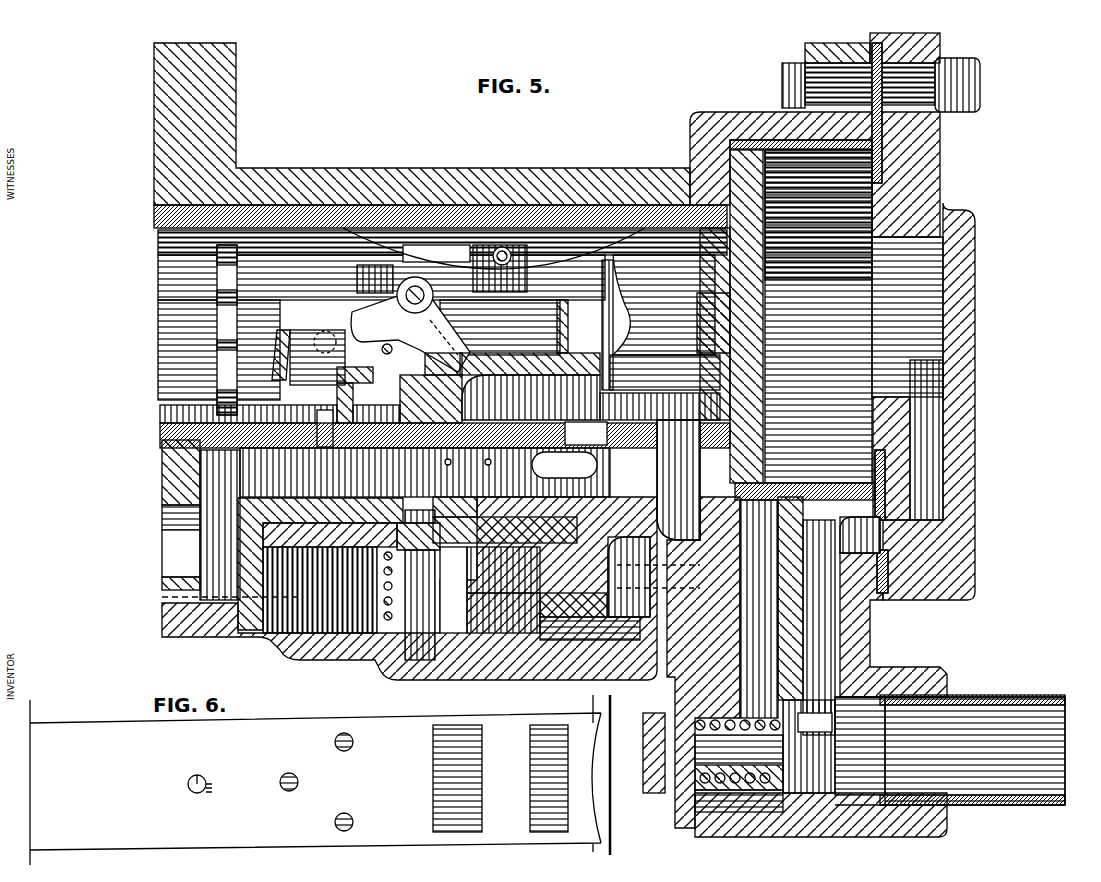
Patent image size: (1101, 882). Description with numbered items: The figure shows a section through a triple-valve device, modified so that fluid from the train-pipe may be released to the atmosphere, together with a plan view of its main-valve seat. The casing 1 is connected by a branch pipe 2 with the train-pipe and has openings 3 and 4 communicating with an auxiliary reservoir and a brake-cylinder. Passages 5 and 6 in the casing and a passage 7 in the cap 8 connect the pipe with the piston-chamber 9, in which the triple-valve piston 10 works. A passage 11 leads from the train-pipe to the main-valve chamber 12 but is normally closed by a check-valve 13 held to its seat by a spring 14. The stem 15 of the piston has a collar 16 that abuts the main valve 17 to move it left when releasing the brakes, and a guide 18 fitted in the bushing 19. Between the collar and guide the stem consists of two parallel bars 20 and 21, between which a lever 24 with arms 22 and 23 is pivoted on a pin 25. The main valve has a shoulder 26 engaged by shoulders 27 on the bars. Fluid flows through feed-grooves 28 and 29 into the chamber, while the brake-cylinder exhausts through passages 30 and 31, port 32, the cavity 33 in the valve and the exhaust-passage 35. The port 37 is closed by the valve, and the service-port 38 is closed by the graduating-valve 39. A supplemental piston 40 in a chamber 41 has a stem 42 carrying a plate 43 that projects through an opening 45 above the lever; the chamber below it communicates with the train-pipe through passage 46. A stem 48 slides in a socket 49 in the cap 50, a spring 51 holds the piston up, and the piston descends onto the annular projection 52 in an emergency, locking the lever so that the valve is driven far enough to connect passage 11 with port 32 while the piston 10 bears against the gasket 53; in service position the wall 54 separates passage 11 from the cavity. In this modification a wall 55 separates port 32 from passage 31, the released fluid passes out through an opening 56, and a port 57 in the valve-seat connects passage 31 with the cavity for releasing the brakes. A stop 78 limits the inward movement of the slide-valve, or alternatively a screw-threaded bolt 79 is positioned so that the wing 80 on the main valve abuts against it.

In FIG. 5, the casing 1 is at (528, 168).
In FIG. 5, the branch pipe 2 is at (950, 750).
In FIG. 5, the opening or passage 3 is at (165, 345).
In FIG. 5, the opening or passage 4 is at (195, 551).
In FIG. 5, the passage 5 is at (860, 746).
In FIG. 5, the passage 6 is at (819, 627).
In FIG. 5, the passage 7 is at (926, 440).
In FIG. 5, the cap 8 is at (950, 283).
In FIG. 5, the piston-chamber 9 is at (854, 316).
In FIG. 5, the triple-valve piston 10 is at (765, 420).
In FIG. 5, the passage 11 is at (717, 569).
In FIG. 6, the passage 11 is at (549, 778).
In FIG. 5, the main-valve chamber 12 is at (648, 325).
In FIG. 5, the check-valve 13 is at (785, 722).
In FIG. 5, the spring 14 is at (762, 788).
In FIG. 5, the stem 15 is at (664, 305).
In FIG. 5, the shoulder or collar 16 is at (665, 372).
In FIG. 5, the main valve 17 is at (431, 399).
In FIG. 5, the guide 18 is at (222, 360).
In FIG. 5, the bushing 19 is at (470, 207).
In FIG. 5, the bar 20 is at (419, 340).
In FIG. 5, the bar 21 is at (425, 342).
In FIG. 5, the arm 22 is at (443, 338).
In FIG. 5, the arm 23 is at (410, 334).
In FIG. 5, the lever 24 is at (434, 292).
In FIG. 5, the pin 25 is at (415, 292).
In FIG. 5, the shoulder 26 is at (530, 379).
In FIG. 5, the shoulder 27 is at (443, 367).
In FIG. 5, the feed-groove 28 is at (752, 150).
In FIG. 5, the feed-groove 29 is at (818, 404).
In FIG. 5, the passage 30 is at (220, 525).
In FIG. 5, the passage 31 is at (425, 472).
In FIG. 5, the port 32 is at (445, 435).
In FIG. 6, the port 32 is at (457, 778).
In FIG. 5, the cavity 33 is at (531, 397).
In FIG. 6, the exhaust-passage 35 is at (352, 820).
In FIG. 5, the port 37 is at (410, 455).
In FIG. 6, the port 37 is at (289, 773).
In FIG. 5, the service-port 38 is at (367, 395).
In FIG. 5, the graduating-valve 39 is at (370, 355).
In FIG. 5, the supplemental piston 40 is at (577, 528).
In FIG. 5, the chamber 41 is at (350, 522).
In FIG. 5, the stem 42 is at (370, 565).
In FIG. 5, the arm or plate 43 is at (442, 269).
In FIG. 5, the opening 45 is at (352, 298).
In FIG. 5, the passage 46 is at (814, 542).
In FIG. 5, the stem 48 is at (412, 585).
In FIG. 5, the recess or socket 49 is at (445, 640).
In FIG. 5, the cap 50 is at (330, 657).
In FIG. 5, the spring 51 is at (465, 578).
In FIG. 5, the annular projection 52 is at (280, 615).
In FIG. 5, the gasket 53 is at (882, 165).
In FIG. 5, the wall 54 is at (620, 407).
In FIG. 5, the wall 55 is at (500, 469).
In FIG. 5, the opening 56 is at (564, 465).
In FIG. 5, the port 57 is at (460, 469).
In FIG. 6, the port 57 is at (352, 742).
In FIG. 5, the stop 78 is at (317, 415).
In FIG. 6, the stop 78 is at (198, 774).
In FIG. 5, the plug or screw-threaded bolt 79 is at (322, 333).
In FIG. 5, the flange or wing 80 is at (498, 272).